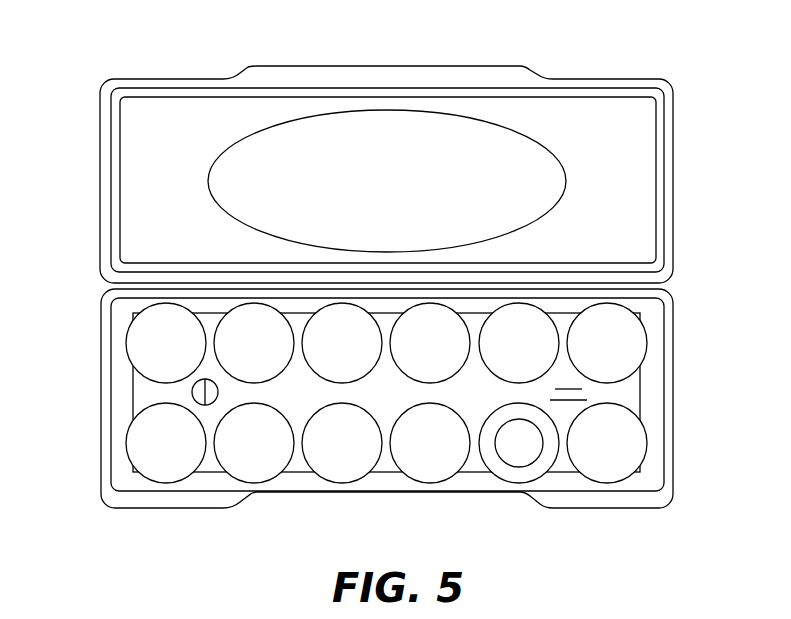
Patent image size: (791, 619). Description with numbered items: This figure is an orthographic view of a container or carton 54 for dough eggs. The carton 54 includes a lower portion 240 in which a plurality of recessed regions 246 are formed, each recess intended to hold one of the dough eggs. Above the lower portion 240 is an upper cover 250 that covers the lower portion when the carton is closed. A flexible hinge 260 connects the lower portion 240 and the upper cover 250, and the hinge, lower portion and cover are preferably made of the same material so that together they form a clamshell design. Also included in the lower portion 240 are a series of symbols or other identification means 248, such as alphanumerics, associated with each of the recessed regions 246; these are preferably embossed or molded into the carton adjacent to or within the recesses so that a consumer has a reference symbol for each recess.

The carton 54 is at (688, 68).
The upper cover 250 is at (673, 231).
The flexible hinge 260 is at (100, 263).
The lower portion 240 is at (673, 353).
The recessed regions 246 is at (153, 360).
The identification means 248 is at (503, 461).